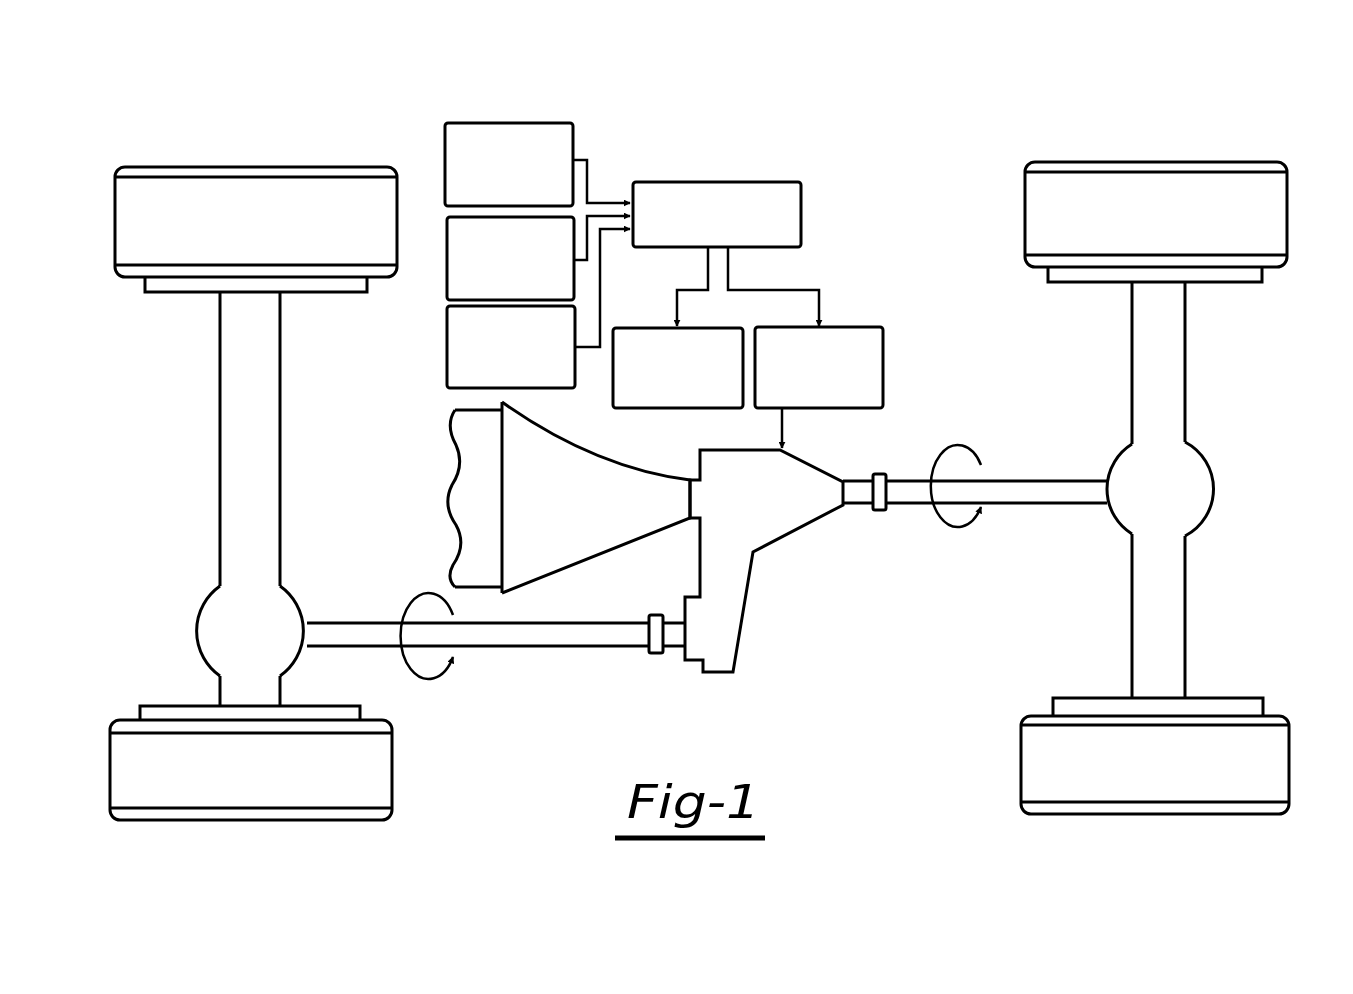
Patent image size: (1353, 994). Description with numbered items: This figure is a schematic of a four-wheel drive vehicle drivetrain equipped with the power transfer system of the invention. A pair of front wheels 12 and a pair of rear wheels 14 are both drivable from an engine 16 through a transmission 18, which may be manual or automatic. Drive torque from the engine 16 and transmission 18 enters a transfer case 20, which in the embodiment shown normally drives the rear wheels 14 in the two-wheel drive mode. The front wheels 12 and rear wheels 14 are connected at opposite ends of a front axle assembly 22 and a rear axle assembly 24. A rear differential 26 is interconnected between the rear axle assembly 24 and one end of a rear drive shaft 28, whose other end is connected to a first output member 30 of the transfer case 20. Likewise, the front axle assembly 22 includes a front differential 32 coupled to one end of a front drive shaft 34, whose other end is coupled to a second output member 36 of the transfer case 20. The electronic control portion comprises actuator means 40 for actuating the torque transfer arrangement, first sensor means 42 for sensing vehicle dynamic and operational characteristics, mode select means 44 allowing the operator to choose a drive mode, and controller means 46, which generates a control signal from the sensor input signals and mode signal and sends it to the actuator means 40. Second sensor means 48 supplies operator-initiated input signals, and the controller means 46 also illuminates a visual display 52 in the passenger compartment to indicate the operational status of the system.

The front wheels 12 is at (243, 200).
The rear wheels 14 is at (1142, 197).
The engine 16 is at (493, 464).
The transmission 18 is at (612, 500).
The transfer case 20 is at (787, 503).
The front axle assembly 22 is at (253, 410).
The rear axle assembly 24 is at (1148, 352).
The rear differential 26 is at (1190, 478).
The rear drive shaft 28 is at (1065, 493).
The first output member 30 is at (862, 478).
The front differential 32 is at (232, 631).
The front drive shaft 34 is at (575, 633).
The second output member 36 is at (673, 641).
The actuator means 40 is at (883, 360).
The first sensor means 42 is at (443, 162).
The mode select means 44 is at (447, 323).
The controller means 46 is at (801, 213).
The second sensor means 48 is at (445, 242).
The visual display 52 is at (657, 408).